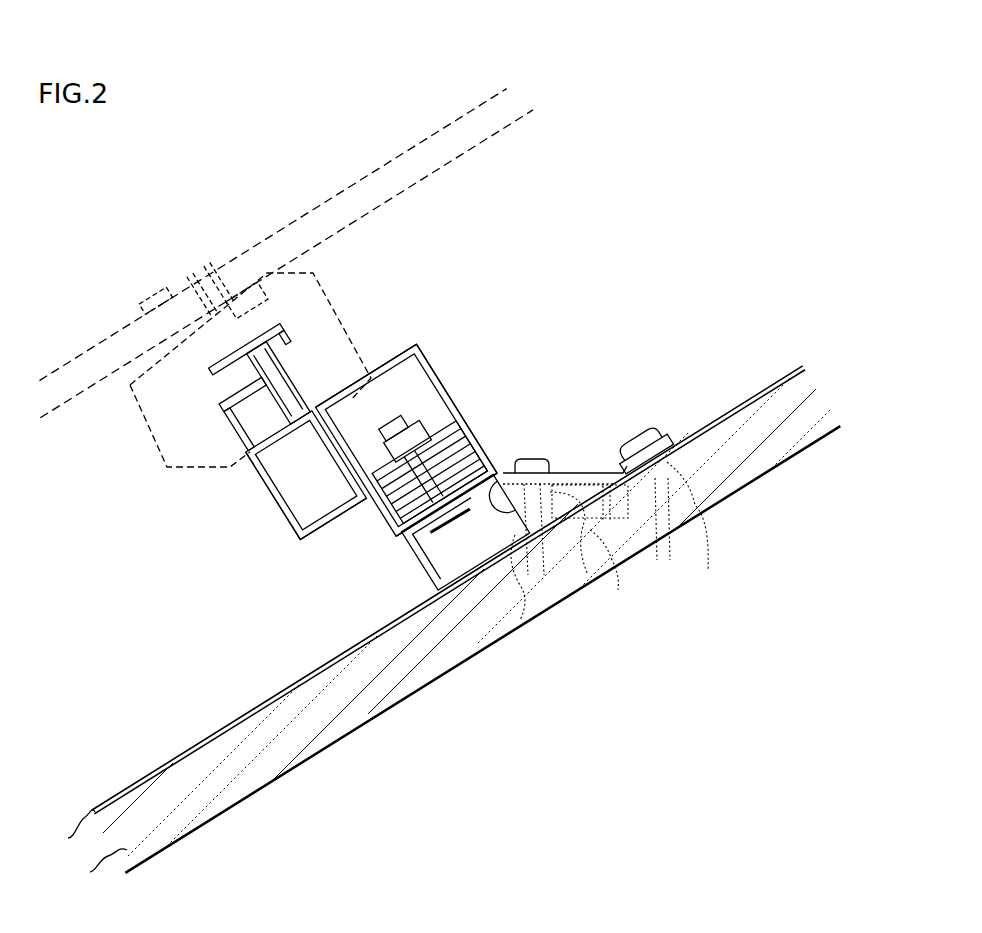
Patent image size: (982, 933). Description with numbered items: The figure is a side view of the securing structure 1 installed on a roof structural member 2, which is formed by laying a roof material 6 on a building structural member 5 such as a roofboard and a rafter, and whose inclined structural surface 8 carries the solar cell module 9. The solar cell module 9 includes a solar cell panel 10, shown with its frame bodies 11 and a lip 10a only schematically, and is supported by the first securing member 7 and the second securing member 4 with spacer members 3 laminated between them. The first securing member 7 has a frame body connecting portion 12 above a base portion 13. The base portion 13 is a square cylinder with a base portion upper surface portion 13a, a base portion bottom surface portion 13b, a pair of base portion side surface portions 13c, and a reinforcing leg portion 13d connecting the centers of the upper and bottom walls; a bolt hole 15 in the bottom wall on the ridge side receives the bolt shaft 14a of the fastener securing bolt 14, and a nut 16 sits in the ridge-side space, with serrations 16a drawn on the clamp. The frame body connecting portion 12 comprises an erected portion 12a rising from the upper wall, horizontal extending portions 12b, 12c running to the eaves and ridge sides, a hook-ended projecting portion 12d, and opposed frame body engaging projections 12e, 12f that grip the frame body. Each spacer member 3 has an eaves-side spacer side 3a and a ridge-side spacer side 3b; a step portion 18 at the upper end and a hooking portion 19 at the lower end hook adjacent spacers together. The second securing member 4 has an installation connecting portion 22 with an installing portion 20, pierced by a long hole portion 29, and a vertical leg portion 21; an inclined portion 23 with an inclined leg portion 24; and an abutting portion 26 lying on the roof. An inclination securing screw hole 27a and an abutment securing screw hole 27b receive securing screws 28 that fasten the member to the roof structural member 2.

The securing structure 1 is at (645, 203).
The roof structural member 2 is at (91, 774).
The spacer member 3 is at (586, 337).
The eaves-side spacer side 3a is at (397, 500).
The ridge-side spacer side 3b is at (492, 450).
The second securing member 4 is at (646, 409).
The building structural member 5 is at (93, 872).
The roof material 6 is at (70, 830).
The first securing member 7 is at (436, 324).
The structural surface 8 is at (240, 716).
The solar cell module 9 is at (365, 139).
The solar cell panel 10 is at (345, 205).
The frame lower lip 10a is at (235, 303).
The frame body 11 is at (192, 278).
The frame body connecting portion 12 is at (176, 412).
The erected portion 12a is at (306, 475).
The horizontal extending portion 12b is at (228, 375).
The horizontal extending portion 12c is at (290, 329).
The projecting portion 12d is at (247, 458).
The frame body engaging projection 12e is at (274, 362).
The frame body engaging projection 12f is at (406, 440).
The base portion 13 is at (242, 522).
The base portion upper surface portion 13a is at (400, 350).
The base portion bottom surface portion 13b is at (334, 555).
The base portion side surface portion 13c is at (428, 348).
The reinforcing leg portion 13d is at (346, 478).
The fastener securing bolt 14 is at (433, 586).
The bolt shaft 14a is at (406, 420).
The bolt hole 15 is at (446, 408).
The nut 16 is at (395, 430).
The serrations 16a is at (367, 519).
The step portion 18 is at (503, 428).
The hooking portion 19 is at (527, 458).
The installing portion 20 is at (499, 505).
The vertical leg portion 21 is at (410, 544).
The installation connecting portion 22 is at (369, 597).
The inclined portion 23 is at (622, 562).
The inclined leg portion 24 is at (591, 602).
The abutting portion 26 is at (705, 532).
The inclination securing screw hole 27a is at (542, 622).
The abutment securing screw hole 27b is at (682, 562).
The securing screw 28 is at (560, 642).
The long hole portion 29 is at (462, 530).